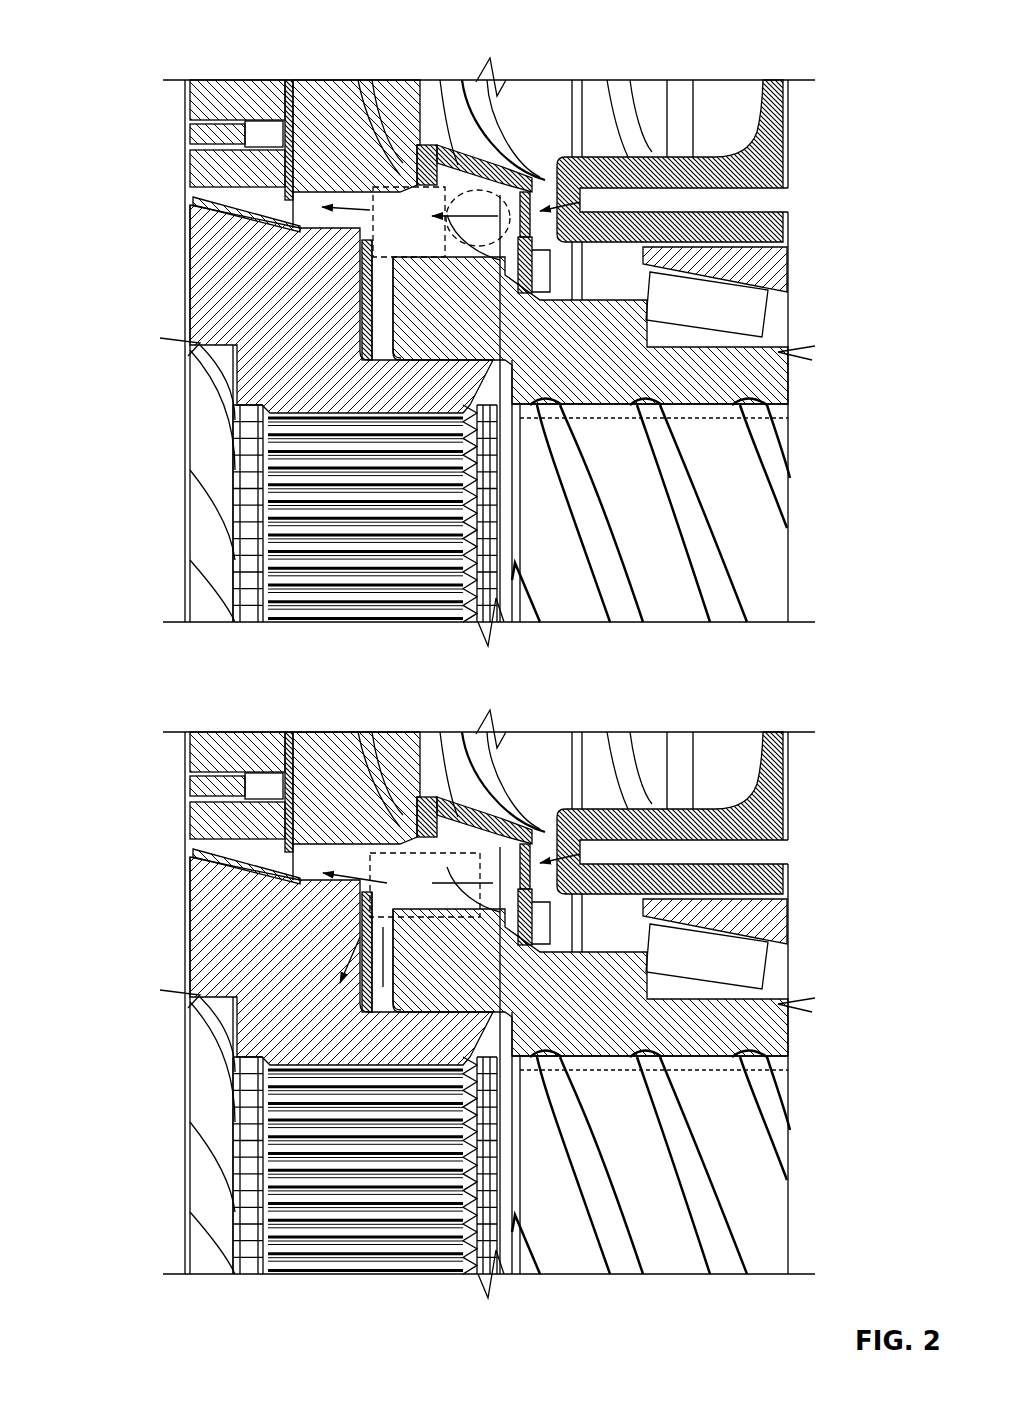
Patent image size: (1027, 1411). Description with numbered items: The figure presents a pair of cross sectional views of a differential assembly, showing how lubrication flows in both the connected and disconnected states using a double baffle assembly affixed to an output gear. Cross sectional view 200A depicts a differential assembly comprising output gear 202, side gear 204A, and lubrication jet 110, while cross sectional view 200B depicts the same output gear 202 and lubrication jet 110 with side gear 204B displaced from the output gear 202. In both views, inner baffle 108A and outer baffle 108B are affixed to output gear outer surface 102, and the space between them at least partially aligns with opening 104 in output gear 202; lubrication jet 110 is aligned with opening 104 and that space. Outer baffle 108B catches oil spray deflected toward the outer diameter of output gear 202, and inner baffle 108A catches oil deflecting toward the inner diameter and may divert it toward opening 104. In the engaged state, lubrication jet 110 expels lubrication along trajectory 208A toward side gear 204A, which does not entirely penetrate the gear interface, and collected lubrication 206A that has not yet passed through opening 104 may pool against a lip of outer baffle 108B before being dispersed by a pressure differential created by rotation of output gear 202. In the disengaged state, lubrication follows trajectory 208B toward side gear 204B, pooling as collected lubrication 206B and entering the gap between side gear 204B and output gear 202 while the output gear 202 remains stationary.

The cross sectional view 200A is at (142, 38).
The cross sectional view 200B is at (148, 700).
The output gear outer surface 102 is at (405, 162).
The opening 104 is at (377, 186).
The inner baffle 108A is at (534, 294).
The outer baffle 108B is at (514, 184).
The lubrication jet 110 is at (768, 165).
The output gear 202 is at (614, 392).
The side gear 204A is at (293, 400).
The side gear 204B is at (297, 1052).
The collected lubrication 206A is at (507, 214).
The collected lubrication 206B is at (500, 926).
The trajectory 208A is at (323, 230).
The trajectory 208B is at (313, 870).